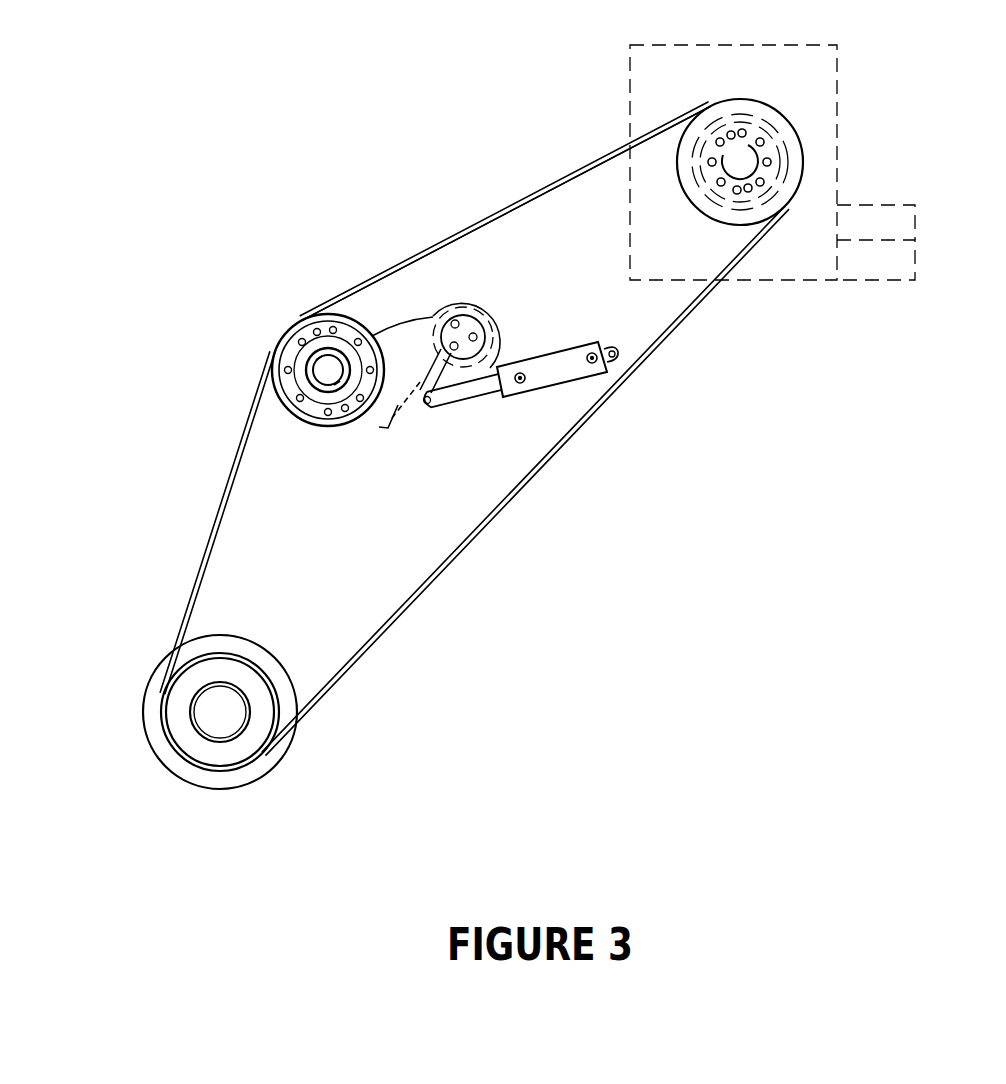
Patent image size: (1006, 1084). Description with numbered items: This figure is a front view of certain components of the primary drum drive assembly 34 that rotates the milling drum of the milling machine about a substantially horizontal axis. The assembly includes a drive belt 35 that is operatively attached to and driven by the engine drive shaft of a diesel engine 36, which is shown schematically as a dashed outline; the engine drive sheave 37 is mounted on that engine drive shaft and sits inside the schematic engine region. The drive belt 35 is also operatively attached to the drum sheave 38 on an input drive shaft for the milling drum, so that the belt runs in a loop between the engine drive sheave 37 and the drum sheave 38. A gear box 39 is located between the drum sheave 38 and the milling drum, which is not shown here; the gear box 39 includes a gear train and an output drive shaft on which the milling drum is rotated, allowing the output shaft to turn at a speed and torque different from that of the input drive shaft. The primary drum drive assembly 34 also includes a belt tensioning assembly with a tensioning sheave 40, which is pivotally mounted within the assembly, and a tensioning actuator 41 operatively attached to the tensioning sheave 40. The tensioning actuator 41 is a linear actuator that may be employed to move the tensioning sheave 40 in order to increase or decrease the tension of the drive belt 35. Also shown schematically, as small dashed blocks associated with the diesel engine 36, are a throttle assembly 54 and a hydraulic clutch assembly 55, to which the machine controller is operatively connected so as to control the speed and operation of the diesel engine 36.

The primary drum drive assembly 34 is at (362, 196).
The drive belt 35 is at (484, 212).
The diesel engine 36 is at (843, 78).
The engine drive sheave 37 is at (808, 139).
The drum sheave 38 is at (252, 657).
The gear box 39 is at (229, 626).
The tensioning sheave 40 is at (370, 308).
The tensioning actuator 41 is at (530, 346).
The throttle assembly 54 is at (918, 210).
The hydraulic clutch assembly 55 is at (918, 258).